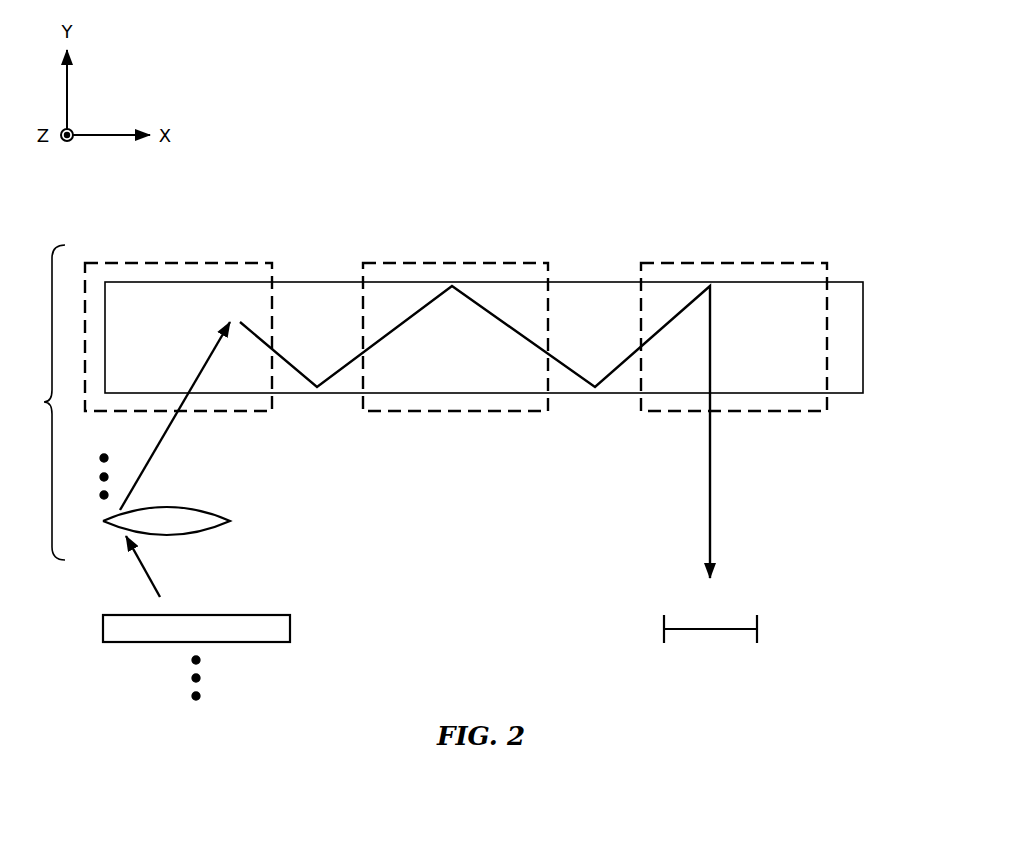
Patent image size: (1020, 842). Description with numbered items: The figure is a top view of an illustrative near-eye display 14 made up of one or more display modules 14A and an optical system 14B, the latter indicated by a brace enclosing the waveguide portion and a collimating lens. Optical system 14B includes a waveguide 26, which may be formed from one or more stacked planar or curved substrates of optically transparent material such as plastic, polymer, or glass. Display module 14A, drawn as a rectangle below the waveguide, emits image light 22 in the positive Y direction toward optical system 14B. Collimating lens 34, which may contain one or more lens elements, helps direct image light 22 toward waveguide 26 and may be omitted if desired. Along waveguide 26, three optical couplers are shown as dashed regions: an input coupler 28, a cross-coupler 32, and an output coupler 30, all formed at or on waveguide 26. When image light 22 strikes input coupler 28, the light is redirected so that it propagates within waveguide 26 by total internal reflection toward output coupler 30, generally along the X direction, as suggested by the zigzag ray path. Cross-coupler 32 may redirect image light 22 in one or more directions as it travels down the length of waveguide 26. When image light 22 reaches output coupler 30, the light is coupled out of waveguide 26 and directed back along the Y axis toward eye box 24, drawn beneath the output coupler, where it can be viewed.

The display 14 is at (697, 88).
The display module 14A is at (103, 627).
The optical system 14B is at (55, 402).
The image light 22 is at (158, 456).
The eye box 24 is at (710, 630).
The waveguide 26 is at (863, 332).
The input coupler 28 is at (180, 262).
The output coupler 30 is at (733, 262).
The cross-coupler 32 is at (453, 262).
The collimating lens 34 is at (242, 522).